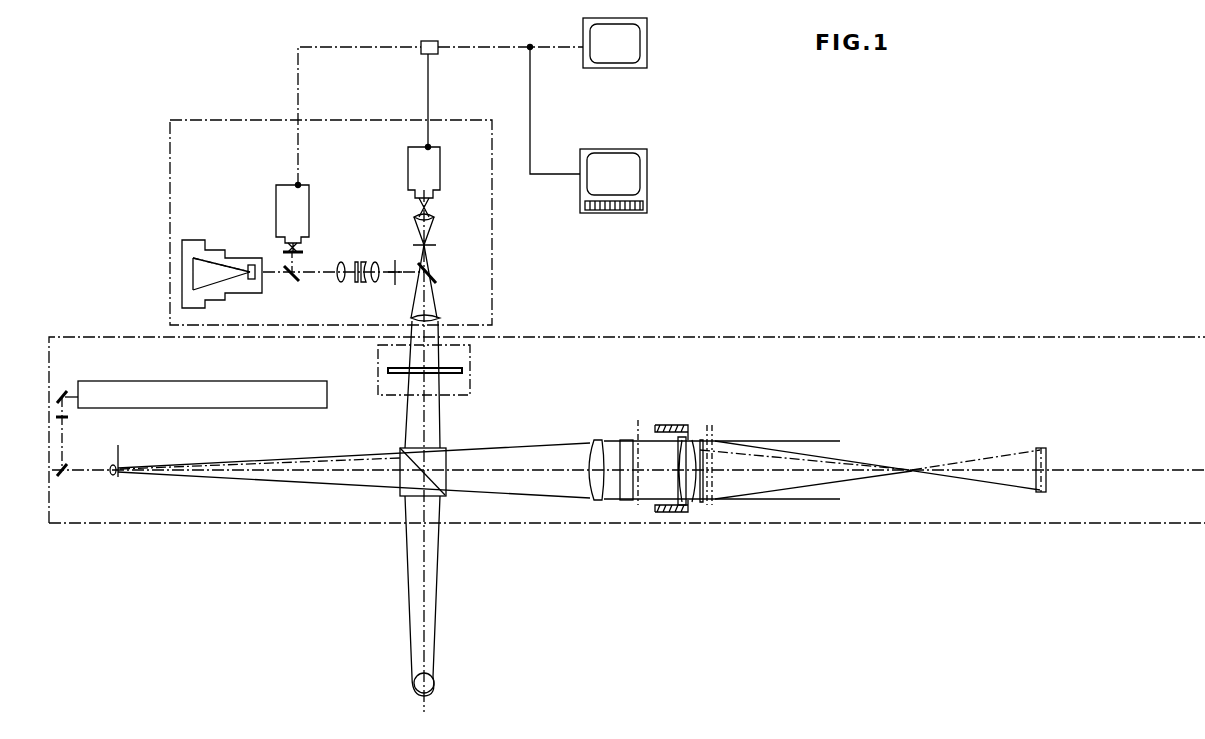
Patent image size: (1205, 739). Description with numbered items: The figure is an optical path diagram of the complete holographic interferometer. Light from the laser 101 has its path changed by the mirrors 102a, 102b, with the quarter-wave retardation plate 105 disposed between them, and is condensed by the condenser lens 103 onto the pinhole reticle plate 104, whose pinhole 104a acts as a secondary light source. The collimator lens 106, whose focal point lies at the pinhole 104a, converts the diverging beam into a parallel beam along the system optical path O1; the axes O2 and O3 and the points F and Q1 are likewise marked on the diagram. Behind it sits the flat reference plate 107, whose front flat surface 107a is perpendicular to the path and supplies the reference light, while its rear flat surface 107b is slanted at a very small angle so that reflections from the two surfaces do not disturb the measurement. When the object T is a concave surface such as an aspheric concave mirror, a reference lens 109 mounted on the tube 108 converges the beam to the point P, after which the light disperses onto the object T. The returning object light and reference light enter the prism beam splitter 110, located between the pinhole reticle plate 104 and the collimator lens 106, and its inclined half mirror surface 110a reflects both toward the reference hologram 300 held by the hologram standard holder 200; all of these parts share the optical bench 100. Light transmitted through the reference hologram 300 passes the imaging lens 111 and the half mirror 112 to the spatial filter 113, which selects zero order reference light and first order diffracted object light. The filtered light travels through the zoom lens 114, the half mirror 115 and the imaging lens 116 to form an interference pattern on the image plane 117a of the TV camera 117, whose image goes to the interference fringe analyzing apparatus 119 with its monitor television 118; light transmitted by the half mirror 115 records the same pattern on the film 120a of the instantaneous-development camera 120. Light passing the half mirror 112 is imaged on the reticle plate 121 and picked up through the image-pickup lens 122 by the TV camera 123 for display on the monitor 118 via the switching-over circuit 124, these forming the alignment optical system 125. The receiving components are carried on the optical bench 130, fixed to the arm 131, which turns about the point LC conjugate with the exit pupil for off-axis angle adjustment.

The optical bench 100 is at (656, 337).
The laser 101 is at (270, 388).
The mirror 102a is at (64, 390).
The mirror 102b is at (64, 478).
The condenser lens 103 is at (114, 478).
The pinhole reticle plate 104 is at (118, 450).
The pinhole 104a is at (160, 466).
The quarter-wave retardation plate 105 is at (70, 418).
The collimator lens 106 is at (594, 502).
The flat reference plate 107 is at (626, 502).
The front flat surface 107a is at (616, 437).
The rear flat surface 107b is at (636, 430).
The tube 108 is at (675, 426).
The reference lens 109 is at (688, 506).
The prism beam splitter 110 is at (405, 497).
The half mirror surface 110a is at (433, 497).
The imaging lens 111 is at (438, 315).
The half mirror 112 is at (436, 276).
The spatial filter 113 is at (392, 284).
The zoom lens 114 is at (360, 262).
The half mirror 115 is at (292, 282).
The imaging lens 116 is at (304, 250).
The TV camera 117 is at (311, 206).
The image plane 117a is at (303, 229).
The monitor television 118 is at (618, 58).
The interference fringe analyzing apparatus 119 is at (618, 155).
The instantaneous-development camera 120 is at (240, 290).
The film 120a is at (200, 262).
The reticle plate 121 is at (440, 242).
The image-pickup lens 122 is at (440, 206).
The TV camera 123 is at (445, 180).
The switching-over circuit 124 is at (435, 42).
The alignment optical system 125 is at (482, 222).
The optical bench 130 is at (215, 120).
The arm 131 is at (452, 120).
The hologram standard holder 200 is at (475, 380).
The reference hologram 300 is at (470, 360).
The system optical path O1 is at (482, 487).
The optical axis O2 is at (430, 421).
The optical axis O3 is at (735, 490).
The convergence point P is at (928, 468).
The focal point F is at (926, 472).
The point Q1 is at (930, 474).
The object to be examined T is at (1043, 447).
The turning center point LC is at (446, 677).